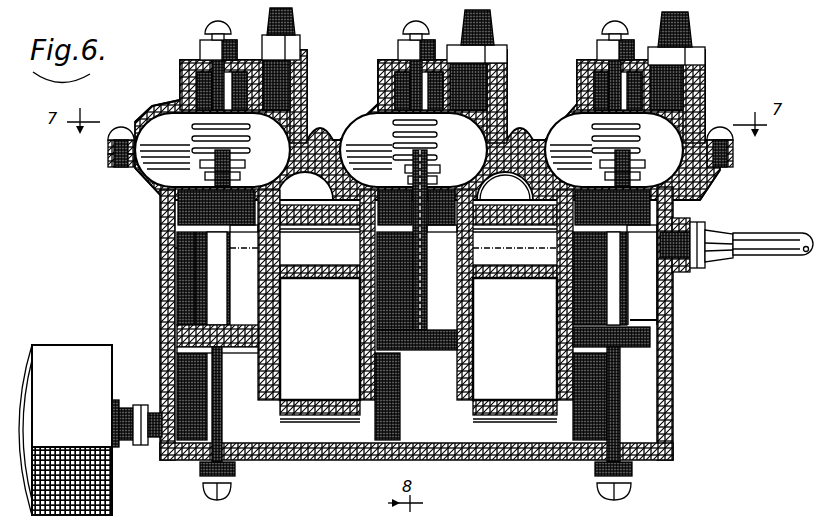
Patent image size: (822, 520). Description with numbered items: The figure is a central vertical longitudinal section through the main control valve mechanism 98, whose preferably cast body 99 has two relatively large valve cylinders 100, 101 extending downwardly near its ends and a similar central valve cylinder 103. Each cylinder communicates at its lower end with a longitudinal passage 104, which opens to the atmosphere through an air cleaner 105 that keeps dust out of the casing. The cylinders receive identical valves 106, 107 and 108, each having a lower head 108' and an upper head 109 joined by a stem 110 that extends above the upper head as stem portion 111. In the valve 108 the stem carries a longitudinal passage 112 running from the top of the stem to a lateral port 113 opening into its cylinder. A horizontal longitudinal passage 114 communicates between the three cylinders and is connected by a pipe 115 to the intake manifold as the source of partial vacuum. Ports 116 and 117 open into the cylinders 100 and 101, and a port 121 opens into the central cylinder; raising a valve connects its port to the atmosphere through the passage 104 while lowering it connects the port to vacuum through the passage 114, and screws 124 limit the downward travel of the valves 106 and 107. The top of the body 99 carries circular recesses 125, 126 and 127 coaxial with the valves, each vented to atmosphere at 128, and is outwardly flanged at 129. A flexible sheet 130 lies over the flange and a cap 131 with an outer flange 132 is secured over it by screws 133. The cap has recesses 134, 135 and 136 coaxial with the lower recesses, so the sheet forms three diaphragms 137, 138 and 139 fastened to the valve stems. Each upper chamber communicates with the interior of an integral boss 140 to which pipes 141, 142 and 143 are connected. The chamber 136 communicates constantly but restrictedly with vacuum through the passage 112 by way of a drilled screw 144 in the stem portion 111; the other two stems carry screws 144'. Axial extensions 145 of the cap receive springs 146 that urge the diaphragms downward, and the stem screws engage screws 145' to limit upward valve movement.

The main control valve mechanism 98 is at (160, 241).
The valve casing body 99 is at (672, 345).
The valve cylinder 100 is at (188, 266).
The valve cylinder 101 is at (650, 302).
The central valve cylinder 103 is at (384, 298).
The longitudinal passage 104 is at (489, 440).
The air cleaner 105 is at (68, 345).
The valve 106 is at (195, 292).
The valve 107 is at (600, 288).
The valve 108 is at (416, 359).
The lower head 108' is at (411, 396).
The upper head 109 is at (640, 232).
The valve stem 110 is at (209, 280).
The upper stem portion 111 is at (174, 208).
The longitudinal passage 112 is at (427, 248).
The lateral port 113 is at (418, 278).
The longitudinal passage 114 is at (310, 253).
The pipe 115 is at (768, 252).
The port 116 is at (200, 322).
The port 117 is at (657, 320).
The port 121 is at (378, 322).
The screw 124 is at (230, 493).
The circular recess 125 is at (140, 170).
The circular recess 126 is at (680, 195).
The circular recess 127 is at (505, 192).
The vent 128 is at (213, 194).
The outward flange 129 is at (107, 162).
The flexible sheet 130 is at (107, 146).
The cap 131 is at (182, 60).
The outer flange 132 is at (736, 142).
The screw 133 is at (120, 127).
The circular recess 134 is at (140, 113).
The circular recess 135 is at (568, 125).
The circular recess 136 is at (368, 120).
The diaphragm 137 is at (160, 176).
The diaphragm 138 is at (562, 176).
The diaphragm 139 is at (360, 176).
The boss 140 is at (308, 80).
The pipe 141 is at (290, 12).
The pipe 142 is at (684, 14).
The pipe 143 is at (490, 14).
The screw 144 is at (340, 152).
The screw 144' is at (641, 168).
The axial extension 145 is at (401, 75).
The screw 145' is at (401, 29).
The spring 146 is at (251, 128).